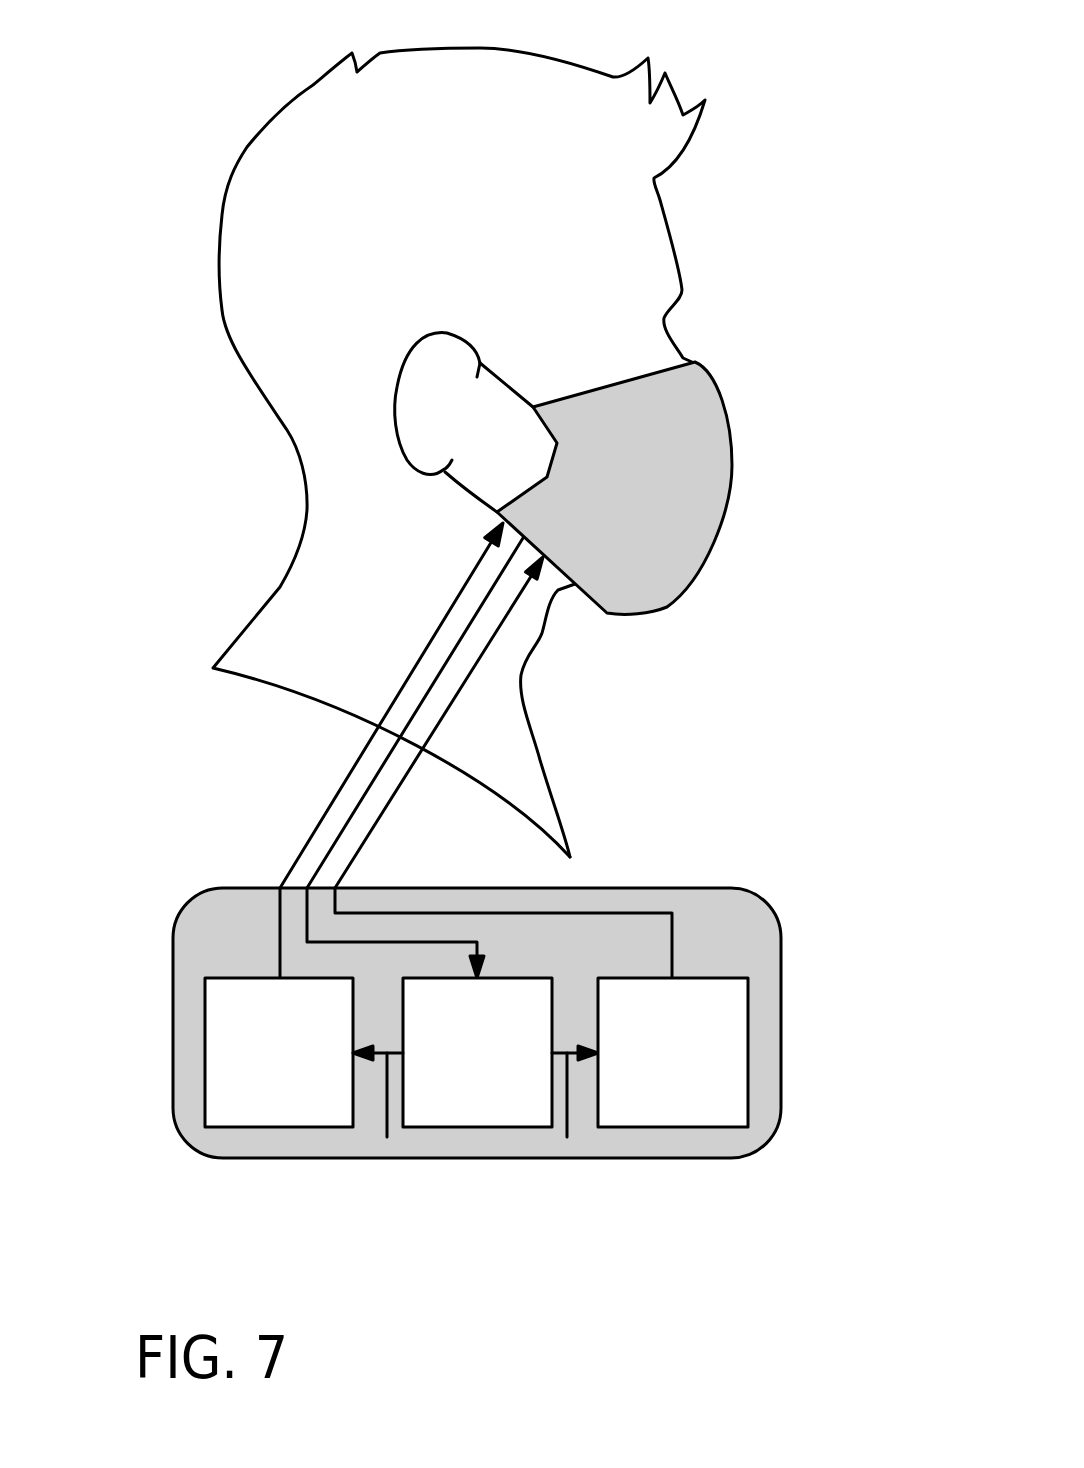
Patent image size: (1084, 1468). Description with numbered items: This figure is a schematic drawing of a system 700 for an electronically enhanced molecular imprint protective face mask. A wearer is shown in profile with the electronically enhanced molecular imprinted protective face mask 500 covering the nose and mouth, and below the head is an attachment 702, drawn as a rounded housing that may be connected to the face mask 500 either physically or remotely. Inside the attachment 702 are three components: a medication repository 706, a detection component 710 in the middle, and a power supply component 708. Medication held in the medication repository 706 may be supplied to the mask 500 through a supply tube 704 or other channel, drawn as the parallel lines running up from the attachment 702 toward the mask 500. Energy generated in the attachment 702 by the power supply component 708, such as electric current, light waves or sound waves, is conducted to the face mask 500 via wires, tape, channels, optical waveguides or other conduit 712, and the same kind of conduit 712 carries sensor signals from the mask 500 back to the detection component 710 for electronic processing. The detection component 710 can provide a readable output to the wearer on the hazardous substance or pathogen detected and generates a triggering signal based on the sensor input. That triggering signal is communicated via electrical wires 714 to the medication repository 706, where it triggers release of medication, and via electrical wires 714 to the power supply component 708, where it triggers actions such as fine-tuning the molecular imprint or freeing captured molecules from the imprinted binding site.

The system for an electronically enhanced molecular imprint protective face mask 700 is at (376, 428).
The electronically enhanced molecular imprinted protective face mask 500 is at (740, 408).
The attachment 702 is at (787, 973).
The supply tube 704 is at (324, 813).
The medication repository 706 is at (279, 1052).
The power supply component 708 is at (673, 1052).
The detection component 710 is at (475, 1052).
The conduit 712 is at (487, 582).
The electrical wires 714 is at (387, 1137).